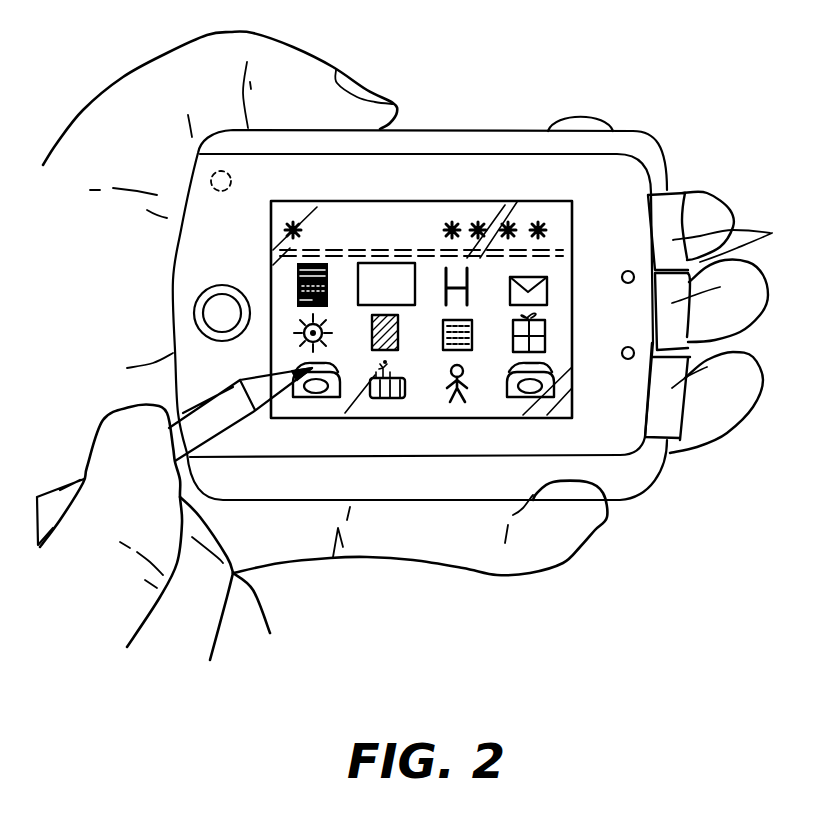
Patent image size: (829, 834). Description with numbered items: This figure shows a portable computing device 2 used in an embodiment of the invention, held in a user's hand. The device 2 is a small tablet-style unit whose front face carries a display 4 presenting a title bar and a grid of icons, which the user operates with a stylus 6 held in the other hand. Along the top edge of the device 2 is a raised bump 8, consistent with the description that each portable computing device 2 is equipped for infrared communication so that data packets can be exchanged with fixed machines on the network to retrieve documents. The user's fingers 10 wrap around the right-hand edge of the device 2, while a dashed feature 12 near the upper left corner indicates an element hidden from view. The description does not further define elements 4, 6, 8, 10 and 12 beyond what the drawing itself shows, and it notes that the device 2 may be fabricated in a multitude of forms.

The portable computing device 2 is at (457, 163).
The touch-sensitive display screen 4 is at (567, 222).
The stylus 6 is at (197, 413).
The infrared transceiver bump 8 is at (603, 120).
The fingers / buttons 10 is at (770, 233).
The hidden button 12 is at (213, 188).